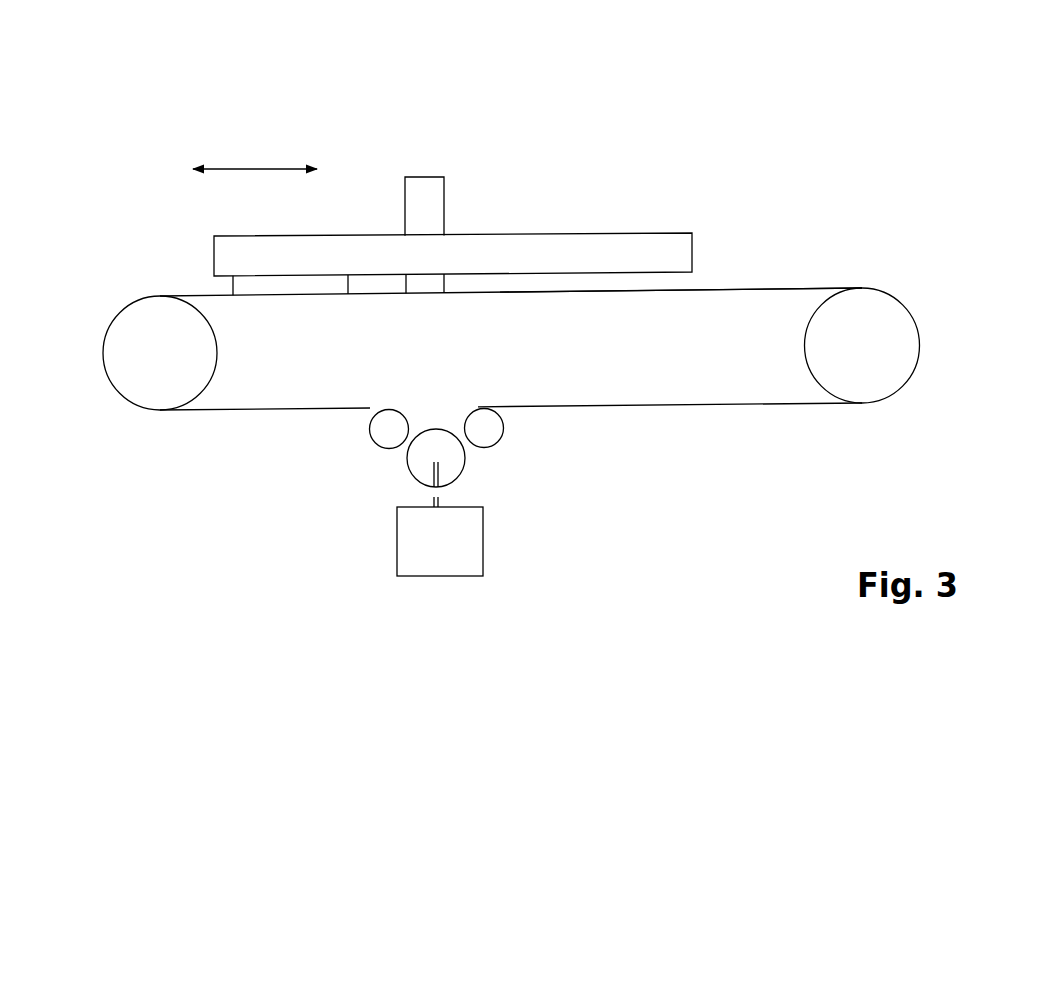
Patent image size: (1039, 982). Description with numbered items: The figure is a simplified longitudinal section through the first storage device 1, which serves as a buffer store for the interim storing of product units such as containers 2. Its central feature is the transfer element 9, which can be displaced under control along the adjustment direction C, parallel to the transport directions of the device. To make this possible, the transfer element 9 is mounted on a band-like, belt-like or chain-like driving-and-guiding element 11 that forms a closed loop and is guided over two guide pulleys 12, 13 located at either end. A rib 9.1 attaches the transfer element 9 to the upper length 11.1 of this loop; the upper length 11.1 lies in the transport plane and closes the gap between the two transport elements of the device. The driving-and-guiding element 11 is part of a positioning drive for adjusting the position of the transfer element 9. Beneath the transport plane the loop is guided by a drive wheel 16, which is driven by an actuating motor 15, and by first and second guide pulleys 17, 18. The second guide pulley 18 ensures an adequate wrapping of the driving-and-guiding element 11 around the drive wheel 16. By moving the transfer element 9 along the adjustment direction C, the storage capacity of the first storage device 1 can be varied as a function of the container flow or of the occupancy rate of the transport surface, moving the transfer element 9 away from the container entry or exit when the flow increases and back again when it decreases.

The first storage device 1 is at (729, 134).
The container 2 is at (424, 186).
The transfer element 9 is at (529, 222).
The rib 9.1 is at (282, 284).
The driving-and-guiding element 11 is at (225, 412).
The upper length 11.1 is at (777, 286).
The guide pulley 12 is at (898, 328).
The guide pulley 13 is at (115, 363).
The actuating motor 15 is at (467, 534).
The drive wheel 16 is at (417, 467).
The first guide pulley 17 is at (388, 418).
The second guide pulley 18 is at (483, 427).